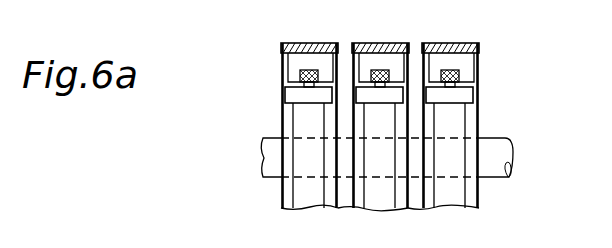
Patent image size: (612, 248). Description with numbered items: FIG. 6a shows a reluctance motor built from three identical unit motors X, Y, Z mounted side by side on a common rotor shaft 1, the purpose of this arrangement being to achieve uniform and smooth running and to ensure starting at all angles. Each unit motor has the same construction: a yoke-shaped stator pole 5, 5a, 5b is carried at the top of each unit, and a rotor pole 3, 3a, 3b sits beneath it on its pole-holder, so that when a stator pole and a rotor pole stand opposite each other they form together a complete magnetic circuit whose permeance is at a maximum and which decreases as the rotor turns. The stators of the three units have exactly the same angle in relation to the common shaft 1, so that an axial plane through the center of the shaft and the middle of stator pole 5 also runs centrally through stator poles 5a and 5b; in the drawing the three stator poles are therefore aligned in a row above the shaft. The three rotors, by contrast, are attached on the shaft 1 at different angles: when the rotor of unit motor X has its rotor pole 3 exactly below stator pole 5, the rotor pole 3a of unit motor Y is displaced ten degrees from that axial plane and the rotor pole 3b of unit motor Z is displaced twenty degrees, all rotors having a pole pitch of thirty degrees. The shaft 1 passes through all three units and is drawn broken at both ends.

The rotor shaft 1 is at (490, 167).
The rotor pole 3 is at (288, 92).
The rotor pole 3a is at (392, 97).
The rotor pole 3b is at (462, 97).
The stator pole 5 is at (305, 58).
The stator pole 5a is at (371, 60).
The stator pole 5b is at (452, 63).
The unit motor X is at (283, 122).
The unit motor Y is at (378, 197).
The unit motor Z is at (470, 125).